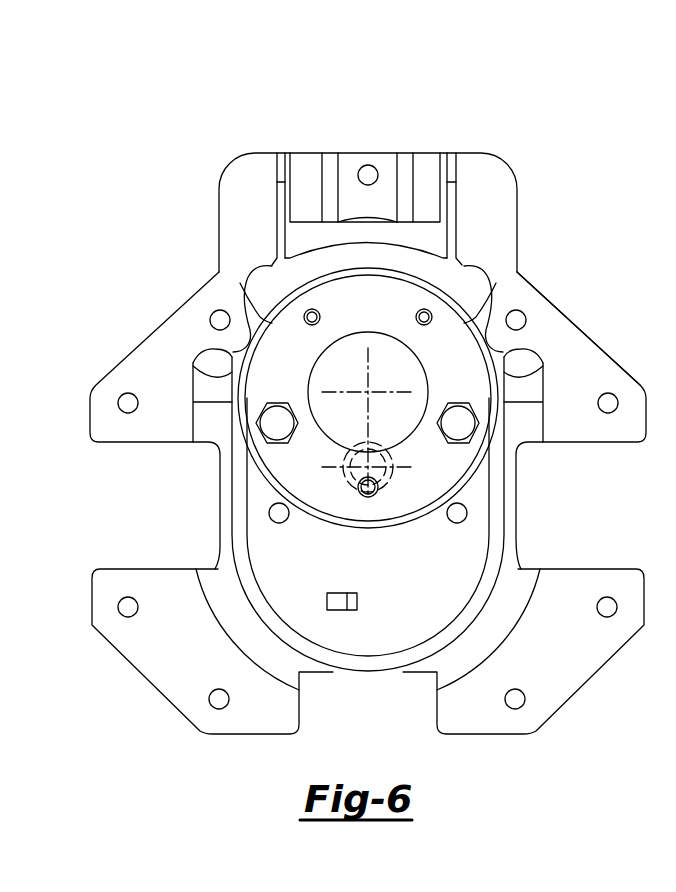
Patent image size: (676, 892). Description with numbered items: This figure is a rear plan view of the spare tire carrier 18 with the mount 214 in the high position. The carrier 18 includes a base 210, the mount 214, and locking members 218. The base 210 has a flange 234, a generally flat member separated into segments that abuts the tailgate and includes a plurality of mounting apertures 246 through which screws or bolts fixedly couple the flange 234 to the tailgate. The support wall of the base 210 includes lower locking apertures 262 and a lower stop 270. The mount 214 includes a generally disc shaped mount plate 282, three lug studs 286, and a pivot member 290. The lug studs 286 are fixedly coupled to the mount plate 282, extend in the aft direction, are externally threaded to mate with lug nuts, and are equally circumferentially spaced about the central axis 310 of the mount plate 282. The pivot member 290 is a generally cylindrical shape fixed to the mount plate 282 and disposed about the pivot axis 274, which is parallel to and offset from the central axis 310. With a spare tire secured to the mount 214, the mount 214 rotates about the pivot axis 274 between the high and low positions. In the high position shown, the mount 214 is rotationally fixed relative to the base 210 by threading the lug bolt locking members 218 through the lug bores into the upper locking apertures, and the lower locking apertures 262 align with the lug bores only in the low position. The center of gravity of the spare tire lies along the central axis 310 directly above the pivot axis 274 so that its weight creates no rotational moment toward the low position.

The carrier 18 is at (228, 120).
The base 210 is at (188, 508).
The mount 214 is at (291, 336).
The locking member 218 is at (275, 430).
The flange 234 is at (488, 202).
The mounting apertures 246 is at (368, 165).
The lower locking aperture 262 is at (272, 521).
The lower stop 270 is at (358, 602).
The pivot axis 274 is at (368, 467).
The mount plate 282 is at (280, 359).
The lug studs 286 is at (416, 317).
The pivot member 290 is at (348, 488).
The central axis 310 is at (368, 392).